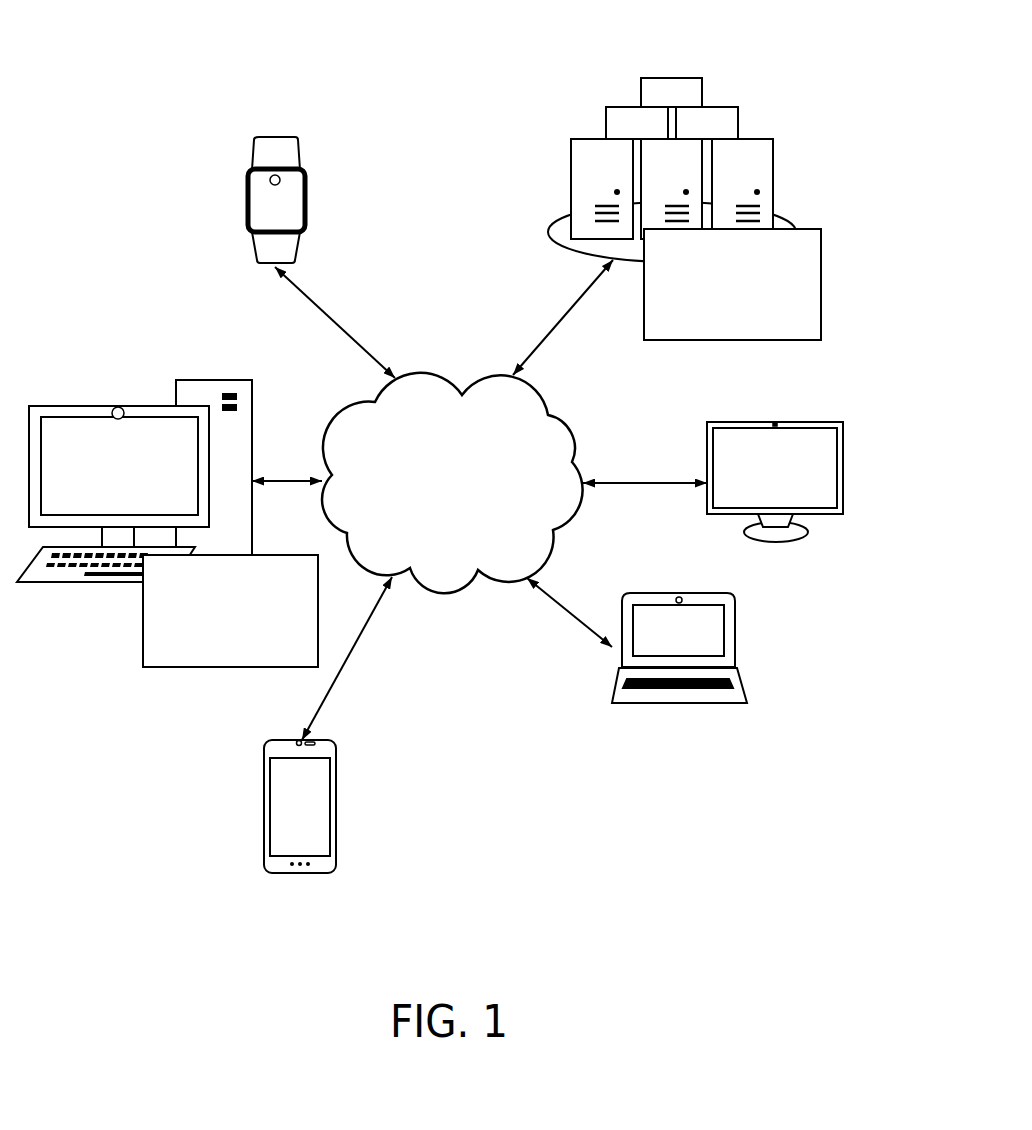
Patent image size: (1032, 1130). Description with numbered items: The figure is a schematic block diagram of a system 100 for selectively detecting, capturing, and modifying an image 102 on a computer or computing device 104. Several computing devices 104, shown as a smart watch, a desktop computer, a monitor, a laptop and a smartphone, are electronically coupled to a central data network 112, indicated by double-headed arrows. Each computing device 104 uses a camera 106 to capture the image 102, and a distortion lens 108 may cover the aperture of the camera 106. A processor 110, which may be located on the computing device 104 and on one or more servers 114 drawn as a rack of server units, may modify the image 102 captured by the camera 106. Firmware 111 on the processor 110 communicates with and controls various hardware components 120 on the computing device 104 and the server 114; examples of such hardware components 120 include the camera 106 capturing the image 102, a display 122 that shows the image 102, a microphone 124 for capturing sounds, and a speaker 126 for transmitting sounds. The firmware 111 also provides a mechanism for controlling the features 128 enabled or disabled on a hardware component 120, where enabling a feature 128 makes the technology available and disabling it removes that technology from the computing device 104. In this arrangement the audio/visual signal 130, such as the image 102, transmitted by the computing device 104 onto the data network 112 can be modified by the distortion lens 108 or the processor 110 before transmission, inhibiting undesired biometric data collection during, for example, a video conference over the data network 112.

The system 100 is at (112, 65).
The image 102 is at (248, 190).
The computing device 104 is at (250, 172).
The camera 106 is at (280, 182).
The distortion lens 108 is at (571, 150).
The processor 110 is at (762, 143).
The firmware 111 is at (758, 172).
The data network 112 is at (479, 500).
The server 114 is at (571, 190).
The hardware components 120 is at (863, 437).
The display 122 is at (779, 478).
The microphone 124 is at (303, 751).
The speaker 126 is at (295, 883).
The features 128 is at (324, 882).
The audio/visual signal 130 is at (861, 516).